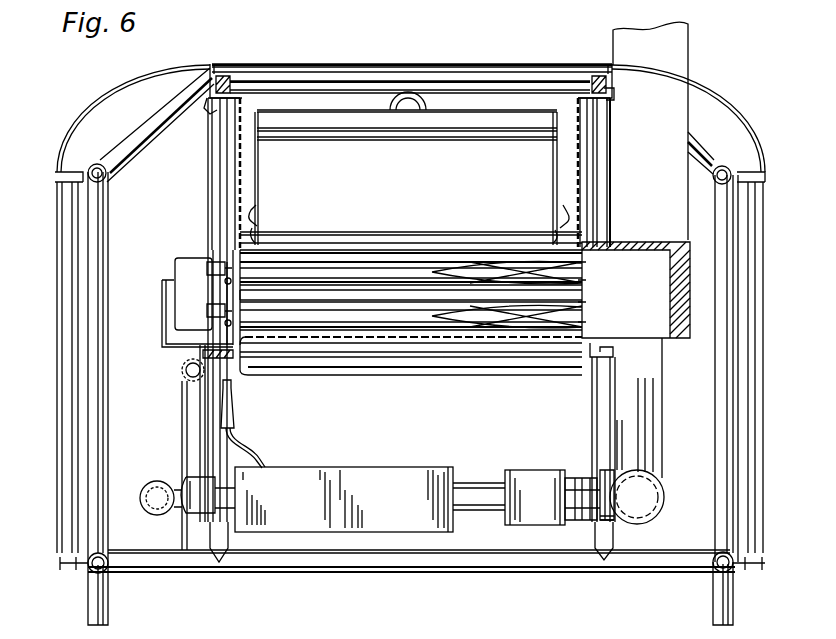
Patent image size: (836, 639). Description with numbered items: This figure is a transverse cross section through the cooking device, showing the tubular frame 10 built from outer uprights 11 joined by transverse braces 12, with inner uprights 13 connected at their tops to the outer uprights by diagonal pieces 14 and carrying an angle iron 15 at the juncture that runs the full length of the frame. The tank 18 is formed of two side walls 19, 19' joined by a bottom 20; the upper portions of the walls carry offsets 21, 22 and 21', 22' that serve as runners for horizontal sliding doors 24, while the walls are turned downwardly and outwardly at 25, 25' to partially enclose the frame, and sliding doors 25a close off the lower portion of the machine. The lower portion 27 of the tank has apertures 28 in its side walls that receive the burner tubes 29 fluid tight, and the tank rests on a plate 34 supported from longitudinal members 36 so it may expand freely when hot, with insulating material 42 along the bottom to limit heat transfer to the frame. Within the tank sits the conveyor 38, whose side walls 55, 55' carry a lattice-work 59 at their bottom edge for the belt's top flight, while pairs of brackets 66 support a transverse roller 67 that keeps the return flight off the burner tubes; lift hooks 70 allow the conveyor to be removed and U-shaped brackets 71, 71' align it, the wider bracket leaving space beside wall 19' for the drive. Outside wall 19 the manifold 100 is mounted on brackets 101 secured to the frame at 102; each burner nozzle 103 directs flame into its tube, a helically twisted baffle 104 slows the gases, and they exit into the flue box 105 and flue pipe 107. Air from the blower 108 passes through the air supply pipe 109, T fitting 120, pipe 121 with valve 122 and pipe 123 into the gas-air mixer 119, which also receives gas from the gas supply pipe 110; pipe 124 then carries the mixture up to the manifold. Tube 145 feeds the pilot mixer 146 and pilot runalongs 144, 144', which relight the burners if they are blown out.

The frame 10 is at (239, 583).
The outer uprights 11 is at (108, 438).
The transverse braces 12 is at (389, 570).
The inner uprights 13 is at (210, 536).
The diagonal pieces 14 is at (173, 129).
The angle iron 15 is at (207, 110).
The tank 18 is at (234, 186).
The side wall 19 is at (211, 174).
The side wall 19' is at (608, 172).
The bottom 20 is at (340, 352).
The offset 21 is at (320, 69).
The offset 21' is at (500, 69).
The offset 22 is at (226, 72).
The offset 22' is at (595, 70).
The horizontal sliding doors 24 is at (352, 88).
The downwardly and outwardly turned wall portion 25 is at (131, 118).
The downwardly and outwardly turned wall portion 25' is at (688, 118).
The sliding doors 25a is at (73, 306).
The lower portion 27 is at (583, 290).
The apertures 28 is at (584, 257).
The burner tubes 29 is at (584, 272).
The plate 34 is at (388, 368).
The longitudinal members 36 is at (210, 372).
The conveyor 38 is at (552, 178).
The insulating material 42 is at (455, 348).
The side wall 55 is at (271, 178).
The side wall 55' is at (533, 216).
The lattice-work 59 is at (408, 234).
The brackets 66 is at (256, 240).
The transverse roller 67 is at (322, 245).
The lift hooks 70 is at (398, 111).
The U-shaped bracket 71 is at (265, 211).
The U-shaped bracket 71' is at (569, 205).
The manifold 100 is at (185, 258).
The brackets 101 is at (162, 339).
The securing point 102 is at (196, 354).
The burner nozzle 103 is at (238, 266).
The baffle 104 is at (430, 271).
The flue box 105 is at (668, 243).
The flue pipe 107 is at (684, 55).
The blower 108 is at (655, 400).
The air supply pipe 109 is at (662, 506).
The gas supply pipe 110 is at (155, 483).
The gas-air mixer 119 is at (338, 468).
The T fitting 120 is at (600, 527).
The pipe 121 is at (576, 478).
The valve 122 is at (538, 472).
The pipe 123 is at (458, 488).
The pipe 124 is at (228, 496).
The pilot runalong 144 is at (204, 303).
The pilot runalong 144' is at (204, 315).
The tube 145 is at (255, 452).
The pilot mixer 146 is at (233, 413).